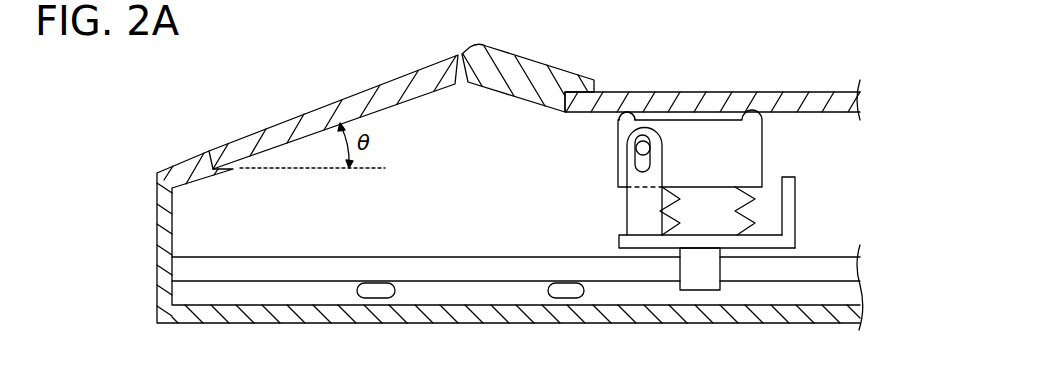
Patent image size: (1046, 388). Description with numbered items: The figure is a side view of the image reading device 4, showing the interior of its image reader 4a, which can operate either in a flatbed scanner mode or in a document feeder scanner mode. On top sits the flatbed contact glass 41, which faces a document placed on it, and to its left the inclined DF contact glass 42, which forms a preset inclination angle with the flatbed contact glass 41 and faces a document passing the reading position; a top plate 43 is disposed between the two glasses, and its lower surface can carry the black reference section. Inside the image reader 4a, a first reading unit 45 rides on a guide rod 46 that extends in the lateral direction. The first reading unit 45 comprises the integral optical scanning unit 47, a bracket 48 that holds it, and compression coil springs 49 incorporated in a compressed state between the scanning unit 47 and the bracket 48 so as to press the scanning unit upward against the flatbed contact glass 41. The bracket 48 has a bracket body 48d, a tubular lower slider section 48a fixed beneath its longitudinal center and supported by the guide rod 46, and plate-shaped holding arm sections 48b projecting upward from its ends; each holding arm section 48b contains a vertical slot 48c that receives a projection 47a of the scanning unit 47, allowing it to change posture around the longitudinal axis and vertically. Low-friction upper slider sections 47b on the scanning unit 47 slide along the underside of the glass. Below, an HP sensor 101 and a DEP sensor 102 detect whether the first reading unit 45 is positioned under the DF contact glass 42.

The image reading device 4 is at (103, 237).
The image reader 4a is at (534, 85).
The flatbed contact glass 41 is at (795, 92).
The DF contact glass 42 is at (312, 110).
The top plate 43 is at (523, 58).
The first reading unit 45 is at (716, 203).
The guide rod 46 is at (380, 260).
The integral optical scanning unit 47 is at (698, 118).
The projection 47a is at (644, 141).
The upper slider section 47b is at (627, 114).
The bracket 48 is at (712, 243).
The lower slider section 48a is at (700, 290).
The holding arm section 48b is at (627, 213).
The slot 48c is at (635, 165).
The bracket body 48d is at (795, 222).
The compression coil spring 49 is at (682, 213).
The HP sensor 101 is at (564, 298).
The DEP sensor 102 is at (376, 298).